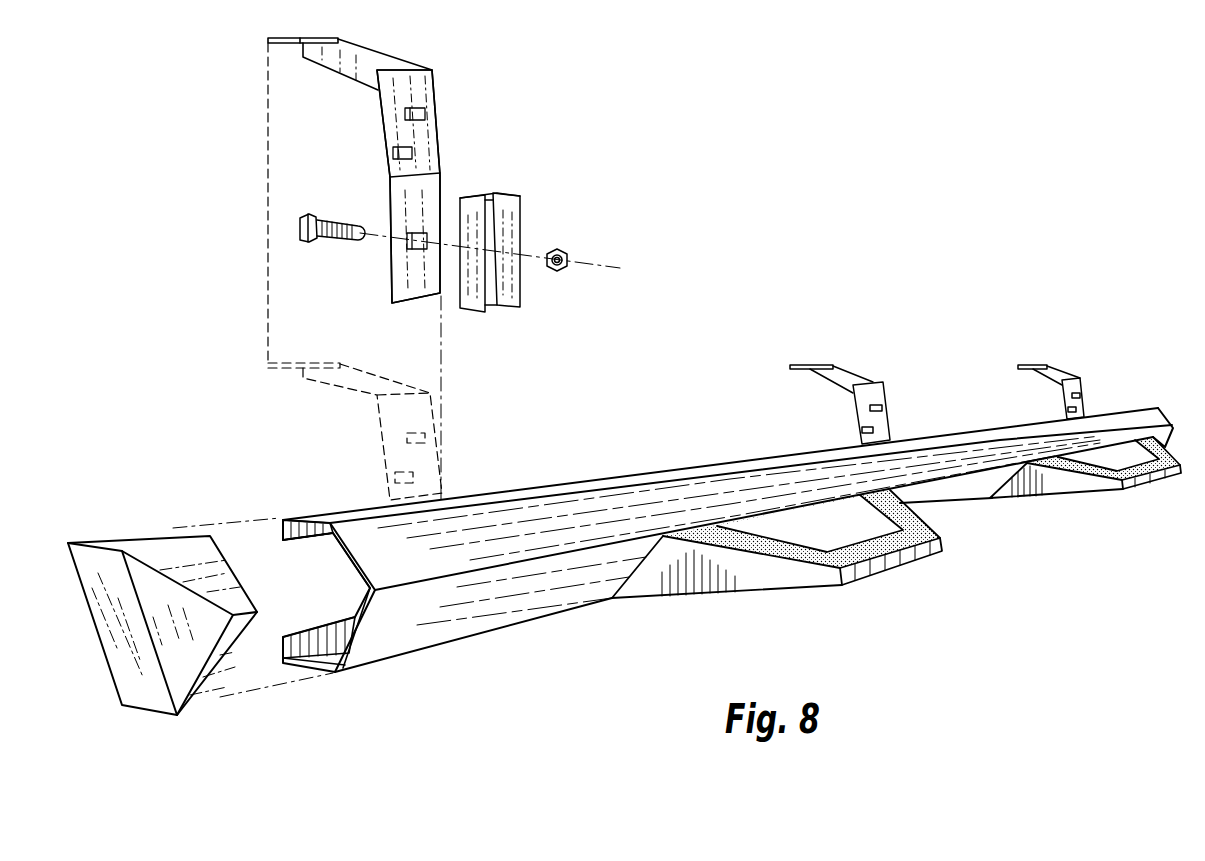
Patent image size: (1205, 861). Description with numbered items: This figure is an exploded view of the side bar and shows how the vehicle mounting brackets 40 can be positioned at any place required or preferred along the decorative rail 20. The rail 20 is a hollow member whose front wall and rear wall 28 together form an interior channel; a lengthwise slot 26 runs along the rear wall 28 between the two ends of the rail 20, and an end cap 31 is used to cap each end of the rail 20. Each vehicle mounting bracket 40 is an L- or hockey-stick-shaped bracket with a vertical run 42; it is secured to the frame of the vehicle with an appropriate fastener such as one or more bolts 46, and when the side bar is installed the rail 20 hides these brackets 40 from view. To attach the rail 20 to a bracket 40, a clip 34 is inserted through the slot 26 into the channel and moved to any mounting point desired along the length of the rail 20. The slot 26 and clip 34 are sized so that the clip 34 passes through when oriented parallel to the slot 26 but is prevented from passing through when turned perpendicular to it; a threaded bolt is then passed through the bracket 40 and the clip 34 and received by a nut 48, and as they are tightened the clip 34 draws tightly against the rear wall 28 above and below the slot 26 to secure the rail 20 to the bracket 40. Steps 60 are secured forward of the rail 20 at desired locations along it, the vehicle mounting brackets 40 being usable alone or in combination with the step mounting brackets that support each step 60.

The decorative rail 20 is at (662, 452).
The slot 26 is at (328, 586).
The rear wall 28 is at (300, 537).
The end cap 31 is at (140, 677).
The clip 34 is at (505, 208).
The vehicle mounting bracket 40 is at (437, 80).
The vertical run 42 is at (385, 167).
The bolt 46 is at (302, 240).
The nut 48 is at (569, 250).
The step 60 is at (890, 572).